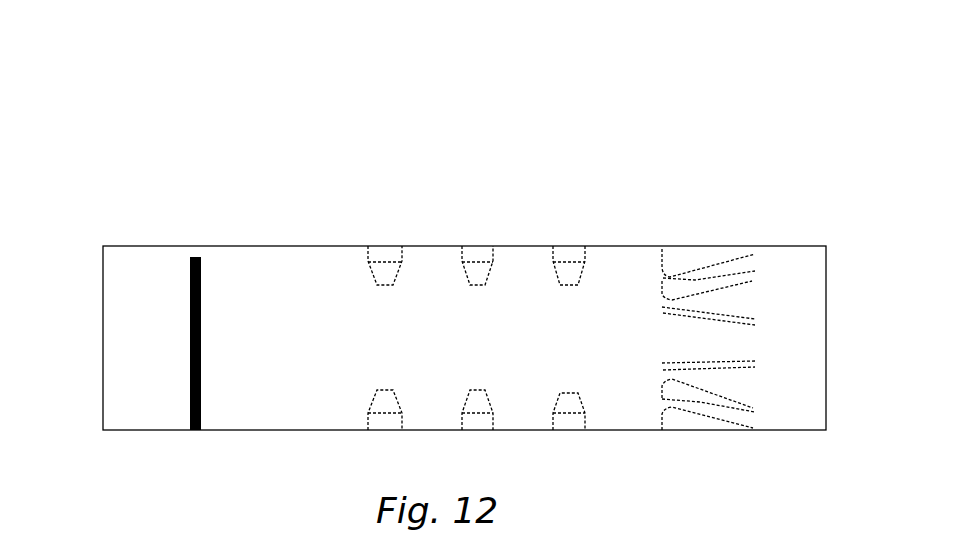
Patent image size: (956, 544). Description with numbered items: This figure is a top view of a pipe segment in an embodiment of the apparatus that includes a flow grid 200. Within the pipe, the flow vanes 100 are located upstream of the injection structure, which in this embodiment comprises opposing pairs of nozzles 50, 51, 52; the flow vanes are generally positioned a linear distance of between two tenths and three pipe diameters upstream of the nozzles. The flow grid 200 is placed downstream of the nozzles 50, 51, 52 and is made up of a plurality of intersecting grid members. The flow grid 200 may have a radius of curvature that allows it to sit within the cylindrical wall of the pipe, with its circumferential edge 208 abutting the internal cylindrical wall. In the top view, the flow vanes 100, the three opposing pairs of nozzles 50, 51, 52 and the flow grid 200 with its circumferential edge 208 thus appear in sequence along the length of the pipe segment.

The flow grid 200 is at (188, 223).
The circumferential edge 208 is at (190, 437).
The nozzles 50 is at (376, 223).
The nozzles 51 is at (477, 233).
The nozzles 52 is at (566, 230).
The flow vanes 100 is at (763, 310).